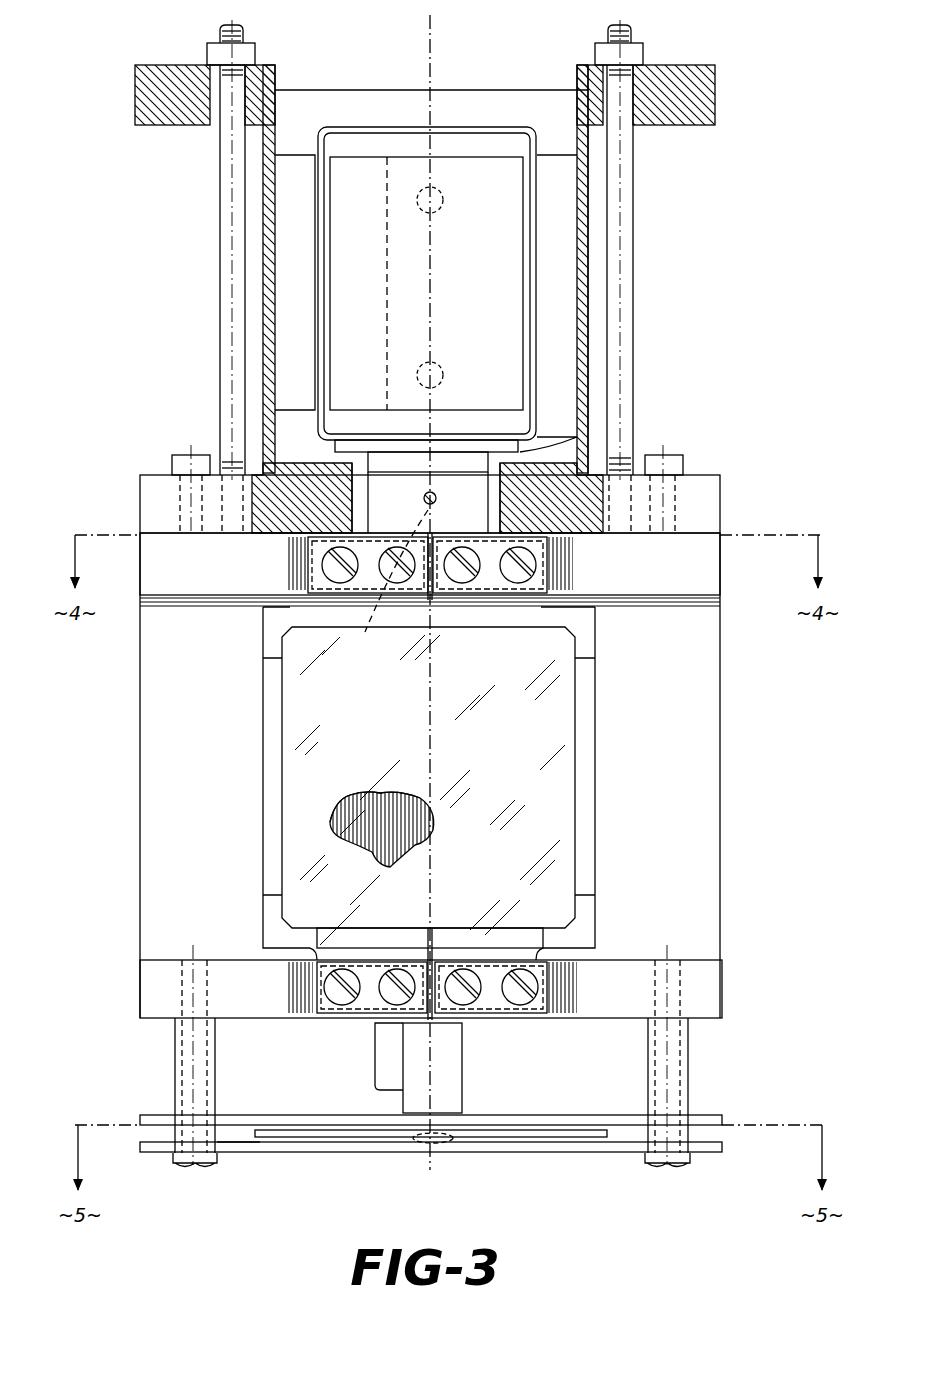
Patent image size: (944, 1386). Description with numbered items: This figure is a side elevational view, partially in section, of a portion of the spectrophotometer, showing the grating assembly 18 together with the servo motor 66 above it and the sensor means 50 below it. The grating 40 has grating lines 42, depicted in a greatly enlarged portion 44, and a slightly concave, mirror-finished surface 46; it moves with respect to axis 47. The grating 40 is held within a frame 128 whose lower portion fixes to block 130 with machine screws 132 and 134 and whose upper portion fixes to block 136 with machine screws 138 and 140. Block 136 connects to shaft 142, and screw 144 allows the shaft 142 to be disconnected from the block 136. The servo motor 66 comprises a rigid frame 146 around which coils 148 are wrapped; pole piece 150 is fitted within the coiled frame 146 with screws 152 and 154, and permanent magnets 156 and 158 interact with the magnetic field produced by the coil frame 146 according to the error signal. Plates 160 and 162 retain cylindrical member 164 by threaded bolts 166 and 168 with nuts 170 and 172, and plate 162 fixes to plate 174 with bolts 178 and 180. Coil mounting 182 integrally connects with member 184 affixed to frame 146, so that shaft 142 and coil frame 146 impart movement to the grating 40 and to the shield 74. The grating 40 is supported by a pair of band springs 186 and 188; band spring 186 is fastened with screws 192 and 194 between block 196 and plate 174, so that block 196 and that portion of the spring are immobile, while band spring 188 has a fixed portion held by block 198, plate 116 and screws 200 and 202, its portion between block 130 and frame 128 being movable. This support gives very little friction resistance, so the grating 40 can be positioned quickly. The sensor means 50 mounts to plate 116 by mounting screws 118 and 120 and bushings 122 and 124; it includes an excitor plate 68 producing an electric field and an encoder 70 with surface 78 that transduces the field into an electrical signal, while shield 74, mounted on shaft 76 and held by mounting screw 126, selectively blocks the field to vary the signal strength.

The grating assembly 18 is at (430, 775).
The grating 40 is at (283, 718).
The grating lines 42 is at (345, 820).
The enlarged portion 44 is at (355, 795).
The surface 46 is at (465, 733).
The axis 47 is at (433, 36).
The sensor means 50 is at (413, 1078).
The servo motor 66 is at (429, 255).
The excitor or sensor plate 68 is at (235, 1118).
The encoder or conductive element 70 is at (288, 1152).
The shield 74 is at (314, 1139).
The shaft 76 is at (462, 1096).
The surface 78 is at (232, 1142).
The plate 116 is at (140, 978).
The mounting screw 118 is at (205, 1165).
The mounting screw 120 is at (668, 1163).
The bushing 122 is at (175, 1050).
The bushing 124 is at (690, 1068).
The mounting screw 126 is at (445, 1145).
The frame 128 is at (598, 800).
The block 130 is at (330, 1010).
The machine screw 132 is at (342, 1008).
The machine screw 134 is at (385, 1005).
The block 136 is at (545, 582).
The machine screw 138 is at (463, 585).
The machine screw 140 is at (517, 585).
The shaft 142 is at (388, 581).
The screw 144 is at (433, 494).
The rigid frame 146 is at (320, 283).
The coils 148 is at (320, 137).
The pole piece 150 is at (500, 268).
The screw 152 is at (440, 372).
The screw 154 is at (440, 210).
The permanent magnet 156 is at (275, 224).
The permanent magnet 158 is at (568, 368).
The plate 160 is at (135, 118).
The plate 162 is at (142, 493).
The cylindrical member 164 is at (583, 192).
The threaded bolt 166 is at (220, 176).
The threaded bolt 168 is at (628, 143).
The nut 170 is at (215, 55).
The nut 172 is at (640, 56).
The plate 174 is at (143, 587).
The bolt 178 is at (196, 455).
The bolt 180 is at (683, 455).
The coil mounting 182 is at (502, 473).
The member 184 is at (545, 450).
The band spring 186 is at (432, 595).
The band spring 188 is at (432, 945).
The screw 192 is at (335, 580).
The screw 194 is at (402, 585).
The block 196 is at (310, 548).
The block 198 is at (550, 1002).
The screw 200 is at (466, 1005).
The screw 202 is at (535, 977).